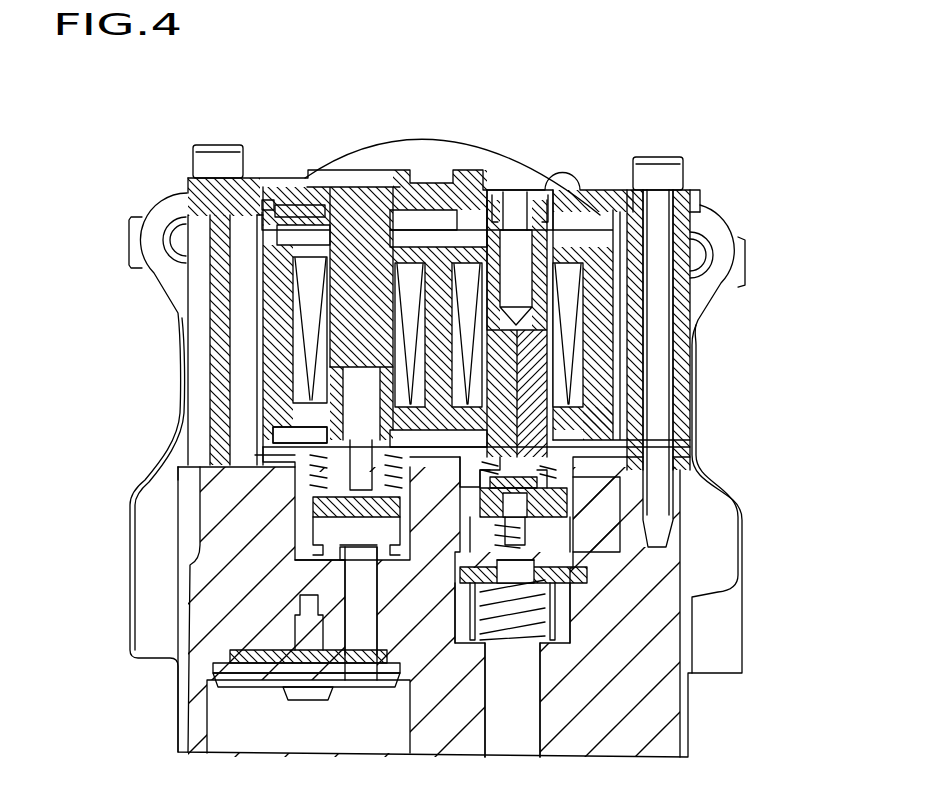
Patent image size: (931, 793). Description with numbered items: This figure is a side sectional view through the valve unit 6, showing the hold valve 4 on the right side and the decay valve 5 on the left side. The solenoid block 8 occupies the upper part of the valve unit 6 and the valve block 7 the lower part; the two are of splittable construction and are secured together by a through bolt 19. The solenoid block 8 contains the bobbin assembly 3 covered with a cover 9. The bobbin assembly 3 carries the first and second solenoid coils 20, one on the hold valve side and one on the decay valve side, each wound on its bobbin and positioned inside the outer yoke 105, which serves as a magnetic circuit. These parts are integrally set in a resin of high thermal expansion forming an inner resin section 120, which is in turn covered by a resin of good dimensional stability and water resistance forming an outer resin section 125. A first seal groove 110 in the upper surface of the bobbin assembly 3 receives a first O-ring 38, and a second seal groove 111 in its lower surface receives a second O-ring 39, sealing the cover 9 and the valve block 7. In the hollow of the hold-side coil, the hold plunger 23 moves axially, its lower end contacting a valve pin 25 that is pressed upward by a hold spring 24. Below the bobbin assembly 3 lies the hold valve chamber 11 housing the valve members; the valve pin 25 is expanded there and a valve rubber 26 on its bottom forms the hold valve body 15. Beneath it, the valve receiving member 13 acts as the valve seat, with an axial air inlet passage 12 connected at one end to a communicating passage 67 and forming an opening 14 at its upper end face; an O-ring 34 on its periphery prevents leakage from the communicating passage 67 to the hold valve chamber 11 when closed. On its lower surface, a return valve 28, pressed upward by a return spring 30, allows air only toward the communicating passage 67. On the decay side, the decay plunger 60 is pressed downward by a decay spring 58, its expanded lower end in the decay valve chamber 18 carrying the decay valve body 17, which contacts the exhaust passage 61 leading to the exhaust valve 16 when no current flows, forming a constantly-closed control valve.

The bobbin assembly 3 is at (256, 264).
The hold valve 4 is at (560, 218).
The decay valve 5 is at (255, 220).
The valve unit 6 is at (214, 148).
The valve block 7 is at (147, 643).
The solenoid block 8 is at (696, 182).
The cover 9 is at (253, 190).
The hold valve chamber 11 is at (600, 450).
The air inlet passage 12 is at (525, 550).
The valve receiving member 13 is at (530, 515).
The opening 14 is at (580, 467).
The hold valve body 15 is at (480, 472).
The exhaust valve 16 is at (268, 670).
The decay valve body 17 is at (335, 555).
The decay valve chamber 18 is at (312, 510).
The through bolt 19 is at (206, 170).
The solenoid coil 20 is at (452, 306).
The hold plunger 23 is at (527, 220).
The hold spring 24 is at (540, 540).
The valve pin 25 is at (553, 413).
The valve rubber 26 is at (650, 424).
The return valve 28 is at (575, 628).
The return spring 30 is at (540, 640).
The O-ring 34 is at (570, 585).
The first O-ring 38 is at (280, 190).
The second O-ring 39 is at (262, 462).
The decay spring 58 is at (275, 455).
The decay plunger 60 is at (290, 428).
The exhaust passage 61 is at (353, 582).
The communicating passage 67 is at (523, 720).
The outer yoke 105 is at (285, 440).
The first seal groove 110 is at (265, 200).
The second seal groove 111 is at (255, 469).
The inner resin section 120 is at (273, 300).
The outer resin section 125 is at (260, 278).